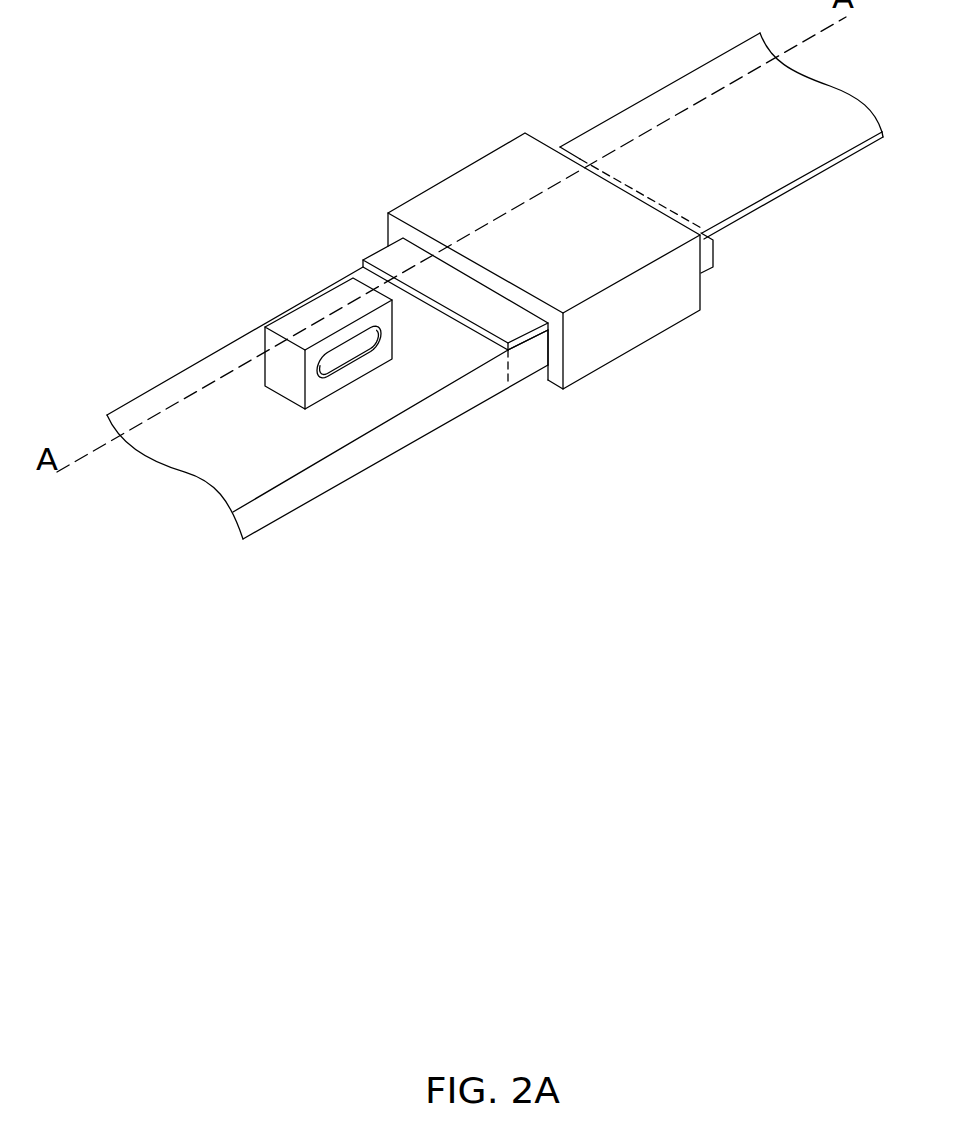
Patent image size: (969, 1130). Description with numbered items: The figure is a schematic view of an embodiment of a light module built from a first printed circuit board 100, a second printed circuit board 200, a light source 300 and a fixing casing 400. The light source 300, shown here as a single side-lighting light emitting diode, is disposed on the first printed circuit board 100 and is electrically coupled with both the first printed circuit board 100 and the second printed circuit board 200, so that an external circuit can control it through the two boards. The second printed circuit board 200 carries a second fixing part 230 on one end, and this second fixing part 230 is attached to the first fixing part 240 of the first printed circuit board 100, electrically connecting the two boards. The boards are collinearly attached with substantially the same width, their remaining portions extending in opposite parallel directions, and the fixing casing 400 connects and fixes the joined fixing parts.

The first printed circuit board 100 is at (302, 442).
The second printed circuit board 200 is at (618, 132).
The second fixing part 230 is at (713, 240).
The first fixing part 240 is at (520, 360).
The light source 300 is at (322, 307).
The fixing casing 400 is at (465, 208).